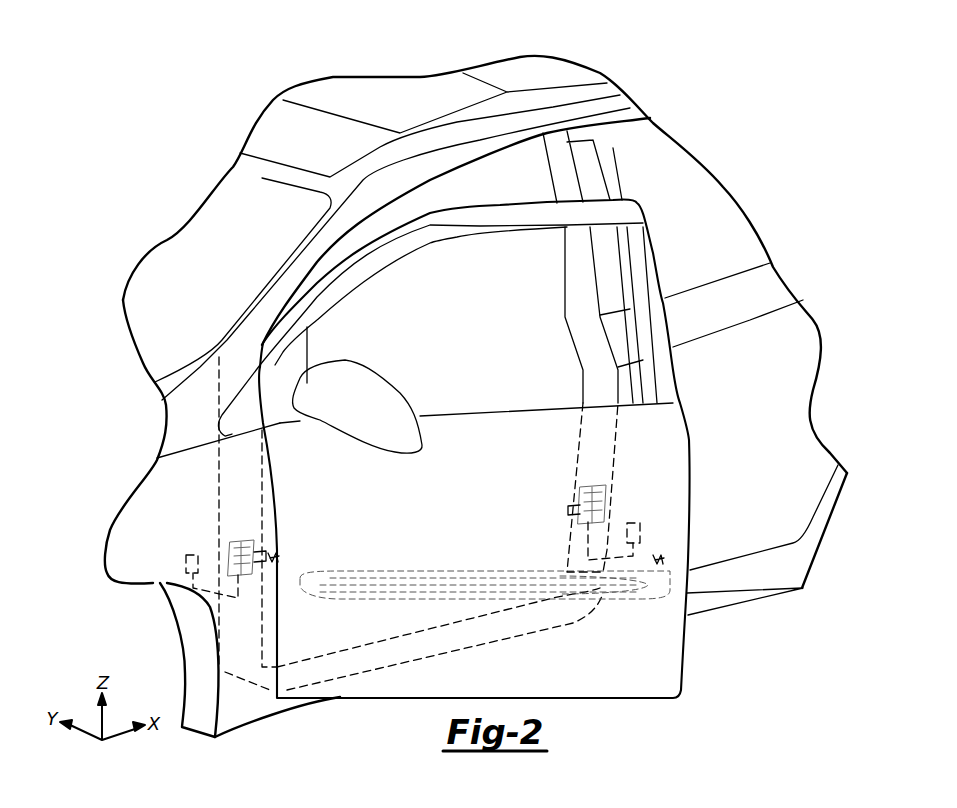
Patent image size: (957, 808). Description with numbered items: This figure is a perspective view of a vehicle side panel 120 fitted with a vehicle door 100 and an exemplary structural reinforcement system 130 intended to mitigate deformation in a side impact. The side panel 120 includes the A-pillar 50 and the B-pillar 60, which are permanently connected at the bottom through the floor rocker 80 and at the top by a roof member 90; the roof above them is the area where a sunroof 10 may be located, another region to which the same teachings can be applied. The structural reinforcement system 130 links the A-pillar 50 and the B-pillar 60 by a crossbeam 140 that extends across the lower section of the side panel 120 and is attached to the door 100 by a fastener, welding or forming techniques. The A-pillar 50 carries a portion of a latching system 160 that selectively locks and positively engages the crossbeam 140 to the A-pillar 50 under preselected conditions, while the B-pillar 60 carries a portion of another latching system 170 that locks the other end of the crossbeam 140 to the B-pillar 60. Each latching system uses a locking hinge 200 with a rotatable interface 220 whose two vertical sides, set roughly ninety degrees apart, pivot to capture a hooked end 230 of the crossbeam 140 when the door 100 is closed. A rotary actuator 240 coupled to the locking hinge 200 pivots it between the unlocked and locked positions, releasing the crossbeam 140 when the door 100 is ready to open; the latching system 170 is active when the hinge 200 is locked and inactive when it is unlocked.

The sunroof 10 is at (338, 113).
The A-pillar 50 is at (307, 272).
The B-pillar 60 is at (563, 170).
The floor rocker 80 is at (357, 675).
The roof member 90 is at (552, 122).
The vehicle door 100 is at (443, 503).
The vehicle side panel 120 is at (650, 100).
The structural reinforcement system 130 is at (850, 80).
The crossbeam 140 is at (478, 568).
The latching system 160 is at (167, 530).
The latching system 170 is at (707, 437).
The locking hinge 200 is at (590, 467).
The rotatable interface 220 is at (577, 502).
The hooked end 230 is at (282, 557).
The rotary actuator 240 is at (189, 555).